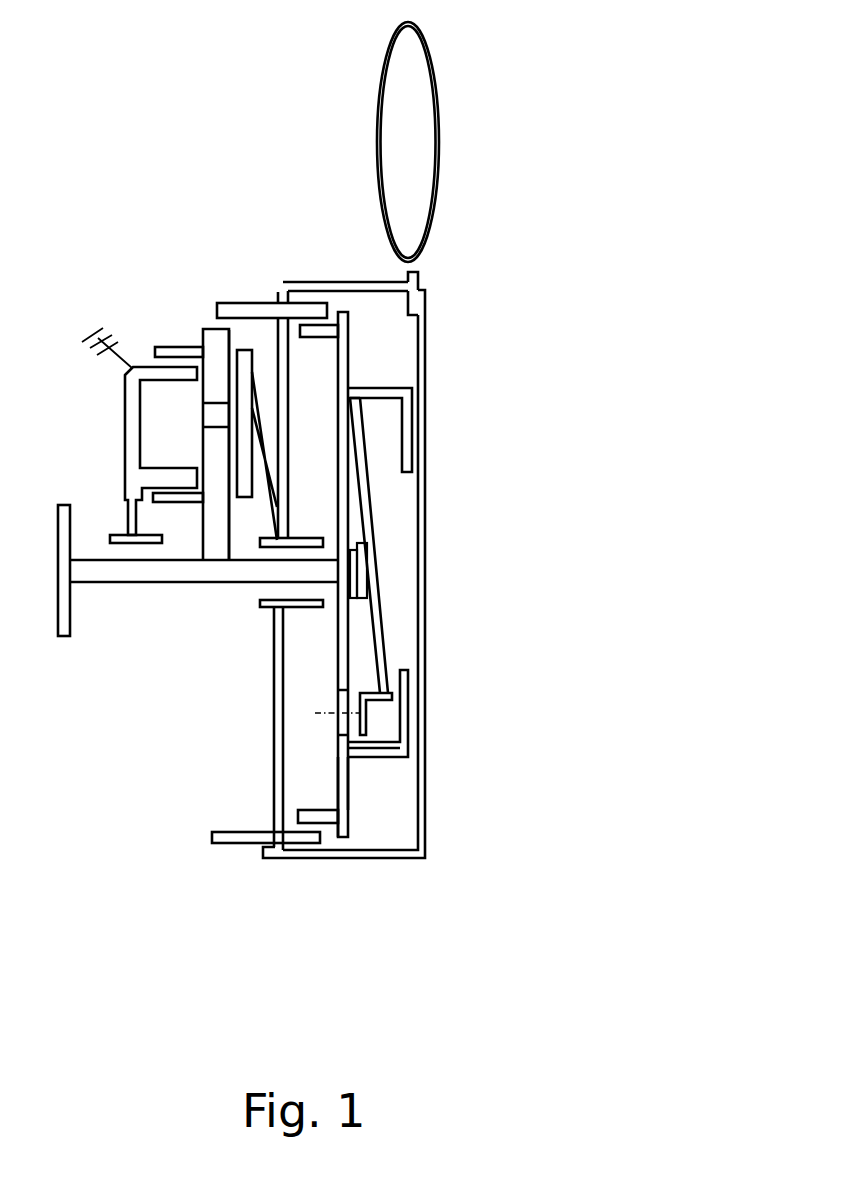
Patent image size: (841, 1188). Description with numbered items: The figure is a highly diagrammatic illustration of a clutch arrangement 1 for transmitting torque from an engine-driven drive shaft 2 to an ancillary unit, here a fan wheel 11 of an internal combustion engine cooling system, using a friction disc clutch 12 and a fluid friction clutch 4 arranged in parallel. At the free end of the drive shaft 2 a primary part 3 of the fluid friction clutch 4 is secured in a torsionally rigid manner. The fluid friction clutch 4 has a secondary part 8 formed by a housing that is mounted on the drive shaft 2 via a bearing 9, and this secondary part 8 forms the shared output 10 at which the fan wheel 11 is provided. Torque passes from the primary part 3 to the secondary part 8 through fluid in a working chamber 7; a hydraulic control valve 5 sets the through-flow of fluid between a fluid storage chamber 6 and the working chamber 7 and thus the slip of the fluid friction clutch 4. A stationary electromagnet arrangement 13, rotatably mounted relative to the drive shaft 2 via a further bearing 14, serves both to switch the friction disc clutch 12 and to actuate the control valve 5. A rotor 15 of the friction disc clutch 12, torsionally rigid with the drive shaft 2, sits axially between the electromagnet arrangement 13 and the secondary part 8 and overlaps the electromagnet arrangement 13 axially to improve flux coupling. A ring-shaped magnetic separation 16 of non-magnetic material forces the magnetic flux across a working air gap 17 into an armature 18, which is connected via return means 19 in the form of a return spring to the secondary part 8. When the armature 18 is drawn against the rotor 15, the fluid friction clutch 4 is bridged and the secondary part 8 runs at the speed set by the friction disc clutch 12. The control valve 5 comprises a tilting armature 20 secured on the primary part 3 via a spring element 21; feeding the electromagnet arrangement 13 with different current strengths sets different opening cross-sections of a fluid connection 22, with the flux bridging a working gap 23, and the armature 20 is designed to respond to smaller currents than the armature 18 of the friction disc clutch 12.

The clutch arrangement 1 is at (122, 707).
The drive shaft 2 is at (127, 573).
The primary part 3 is at (343, 640).
The fluid friction clutch 4 is at (383, 877).
The hydraulic control valve 5 is at (352, 737).
The fluid storage chamber 6 is at (383, 727).
The working chamber 7 is at (308, 701).
The secondary part 8 is at (420, 833).
The bearing 9 is at (258, 605).
The output 10 is at (400, 284).
The fan wheel 11 is at (412, 170).
The friction disc clutch 12 is at (243, 540).
The electromagnet arrangement 13 is at (150, 365).
The bearing 14 is at (120, 535).
The rotor 15 is at (205, 330).
The magnetic separation 16 is at (207, 413).
The working air gap 17 is at (231, 358).
The armature 18 is at (245, 475).
The return means 19 is at (262, 425).
The armature 20 is at (375, 587).
The spring element 21 is at (367, 520).
The fluid connection 22 is at (338, 720).
The working gap 23 is at (363, 557).